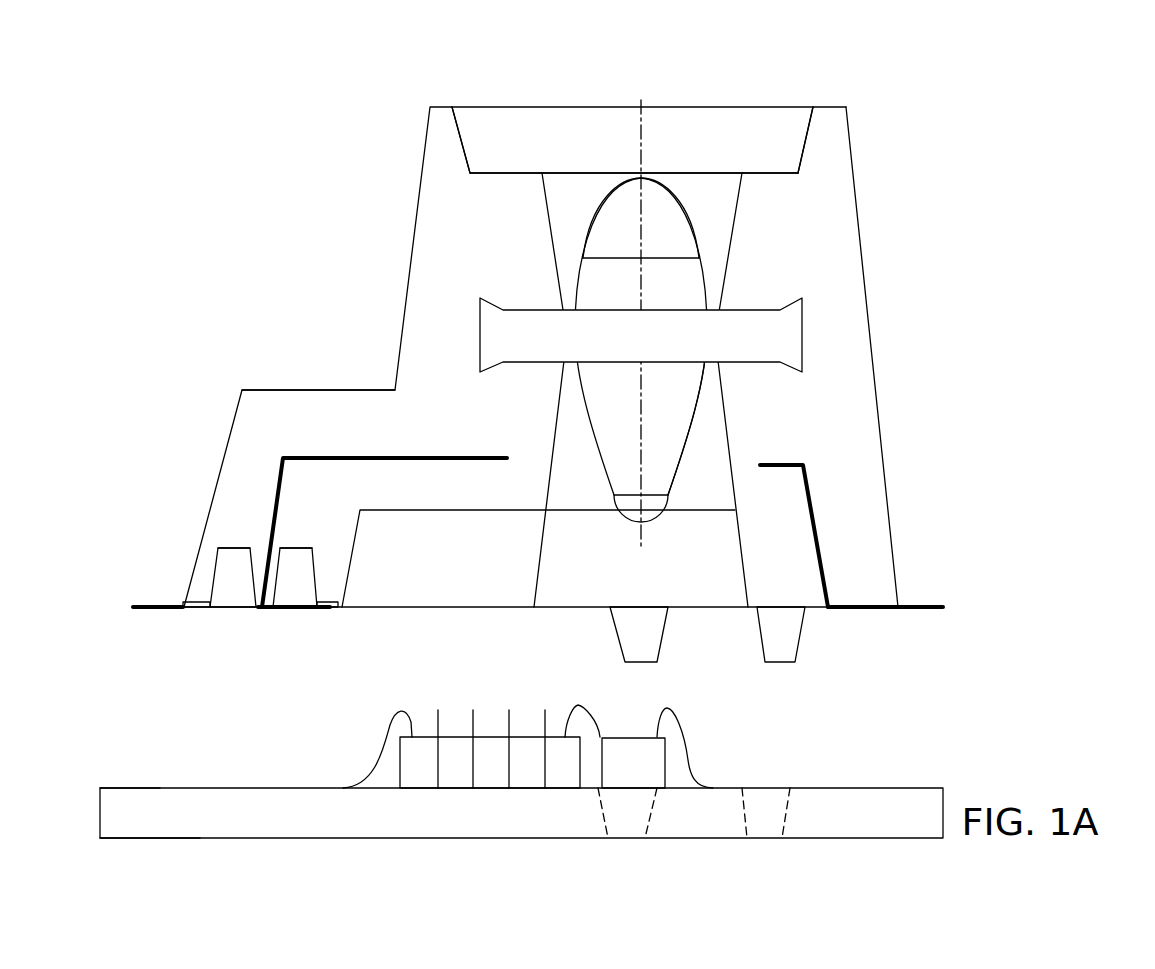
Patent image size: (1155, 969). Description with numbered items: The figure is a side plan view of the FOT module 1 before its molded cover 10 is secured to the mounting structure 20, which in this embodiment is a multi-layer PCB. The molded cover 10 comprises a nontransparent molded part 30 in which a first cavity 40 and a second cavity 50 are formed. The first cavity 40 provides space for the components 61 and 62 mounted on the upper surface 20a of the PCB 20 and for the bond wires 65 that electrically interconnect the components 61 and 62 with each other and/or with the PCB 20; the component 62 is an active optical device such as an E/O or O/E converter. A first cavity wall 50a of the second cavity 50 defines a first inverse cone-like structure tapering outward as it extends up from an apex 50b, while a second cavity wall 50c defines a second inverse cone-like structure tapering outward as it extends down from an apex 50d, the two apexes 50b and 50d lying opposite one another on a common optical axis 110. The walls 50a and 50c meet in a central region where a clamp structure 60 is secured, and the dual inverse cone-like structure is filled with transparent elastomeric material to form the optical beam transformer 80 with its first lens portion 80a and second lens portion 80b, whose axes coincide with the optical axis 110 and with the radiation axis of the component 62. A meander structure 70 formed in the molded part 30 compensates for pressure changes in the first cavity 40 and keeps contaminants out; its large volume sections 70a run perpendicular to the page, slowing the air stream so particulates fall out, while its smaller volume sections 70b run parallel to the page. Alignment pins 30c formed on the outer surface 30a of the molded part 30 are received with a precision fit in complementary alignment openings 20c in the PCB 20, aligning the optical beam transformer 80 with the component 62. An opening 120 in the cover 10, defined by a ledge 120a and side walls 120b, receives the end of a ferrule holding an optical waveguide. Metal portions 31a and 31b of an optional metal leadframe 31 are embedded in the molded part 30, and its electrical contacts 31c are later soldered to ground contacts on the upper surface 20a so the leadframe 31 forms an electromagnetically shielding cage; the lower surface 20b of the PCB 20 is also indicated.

The FOT module 1 is at (130, 143).
The molded cover 10 is at (859, 85).
The mounting structure 20 is at (874, 754).
The upper surface 20a is at (147, 788).
The substrate bottom surface 20b is at (168, 840).
The alignment openings 20c is at (762, 823).
The nontransparent molded part 30 is at (857, 270).
The outer surface 30a is at (337, 390).
The alignment pins 30c is at (652, 652).
The metal leadframe 31 is at (871, 605).
The metal portion 31a is at (363, 458).
The metal portion 31b is at (786, 465).
The electrical contacts 31c is at (166, 607).
The first cavity 40 is at (467, 512).
The second cavity 50 is at (688, 406).
The first cavity wall 50a is at (684, 436).
The apex 50b is at (662, 498).
The second cavity wall 50c is at (697, 268).
The apex 50d is at (665, 190).
The clamp structure 60 is at (800, 318).
The component 61 is at (498, 777).
The component 62 is at (660, 777).
The bond wires 65 is at (410, 712).
The meander structure 70 is at (199, 551).
The large volume sections 70a is at (292, 547).
The smaller volume sections 70b is at (330, 609).
The optical beam transformer 80 is at (608, 390).
The first lens portion 80a is at (623, 470).
The second lens portion 80b is at (600, 272).
The optical axis 110 is at (641, 125).
The opening 120 is at (514, 116).
The ledge 120a is at (508, 174).
The side walls 120b is at (455, 148).